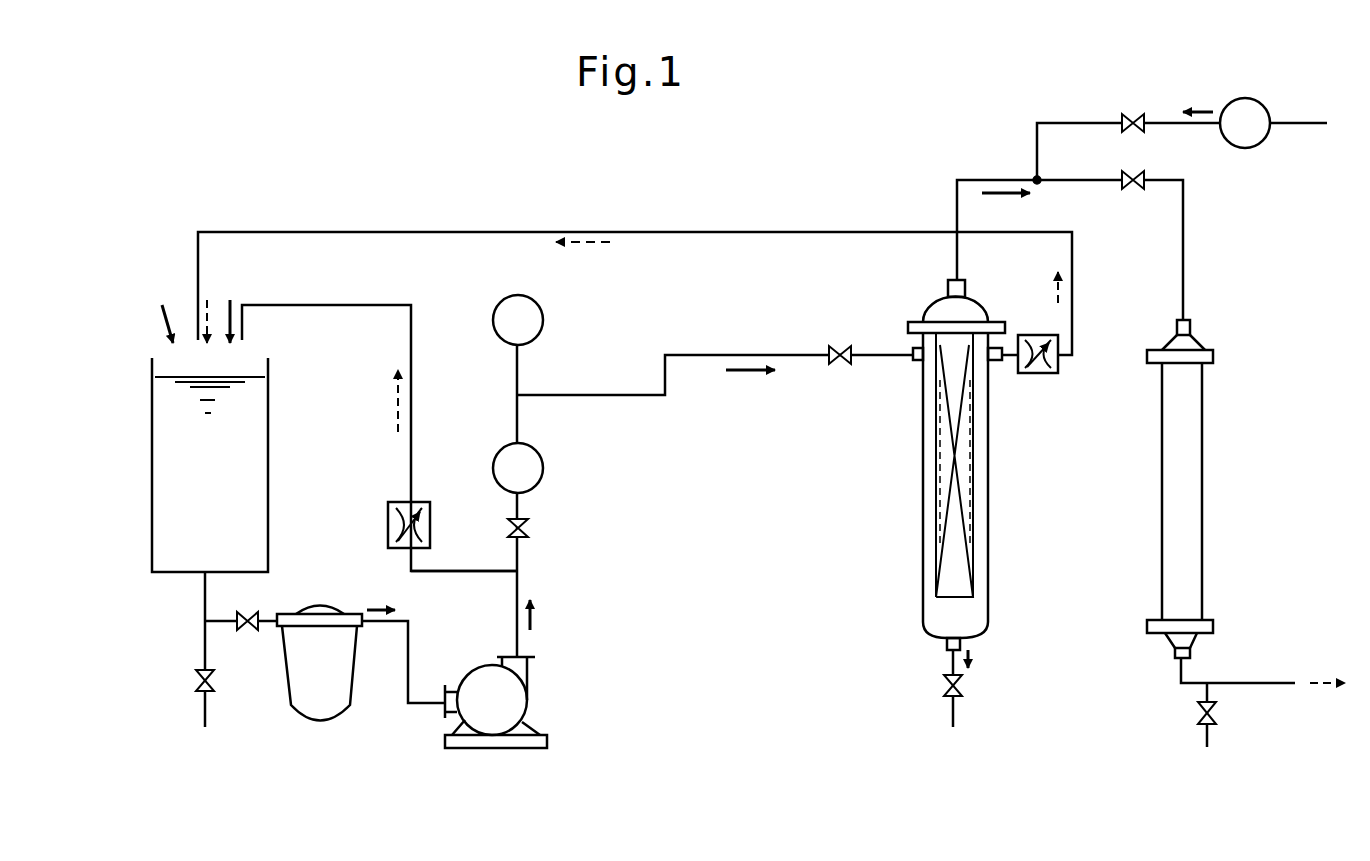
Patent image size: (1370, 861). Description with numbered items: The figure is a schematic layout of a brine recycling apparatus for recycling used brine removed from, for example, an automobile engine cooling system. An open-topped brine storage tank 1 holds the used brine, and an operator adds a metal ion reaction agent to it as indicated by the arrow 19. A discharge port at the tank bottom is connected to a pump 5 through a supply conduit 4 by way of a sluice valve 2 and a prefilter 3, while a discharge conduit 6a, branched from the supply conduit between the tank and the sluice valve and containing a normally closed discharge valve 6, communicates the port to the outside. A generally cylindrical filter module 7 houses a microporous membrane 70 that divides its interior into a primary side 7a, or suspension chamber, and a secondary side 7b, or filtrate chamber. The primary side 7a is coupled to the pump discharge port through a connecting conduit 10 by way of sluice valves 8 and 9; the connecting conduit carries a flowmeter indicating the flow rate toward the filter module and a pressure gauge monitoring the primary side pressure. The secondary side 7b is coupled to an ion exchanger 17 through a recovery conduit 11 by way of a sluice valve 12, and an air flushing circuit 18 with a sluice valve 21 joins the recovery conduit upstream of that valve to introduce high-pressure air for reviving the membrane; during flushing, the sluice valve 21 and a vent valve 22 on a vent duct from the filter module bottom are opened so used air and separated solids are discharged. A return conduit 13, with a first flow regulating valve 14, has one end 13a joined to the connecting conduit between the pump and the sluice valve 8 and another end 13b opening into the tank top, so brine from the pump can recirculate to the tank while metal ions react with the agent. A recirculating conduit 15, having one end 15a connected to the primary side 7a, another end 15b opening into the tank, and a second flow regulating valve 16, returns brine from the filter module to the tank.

The brine storage tank 1 is at (150, 522).
The sluice valve 2 is at (247, 632).
The prefilter 3 is at (318, 722).
The supply conduit 4 is at (418, 705).
The pump 5 is at (497, 720).
The discharge valve 6 is at (200, 683).
The discharge conduit 6a is at (203, 645).
The filter module 7 is at (965, 451).
The primary side 7a is at (920, 380).
The secondary side 7b is at (975, 312).
The sluice valve 8 is at (526, 527).
The sluice valve 9 is at (842, 348).
The connecting conduit 10 is at (695, 355).
The recovery conduit 11 is at (1183, 250).
The sluice valve 12 is at (1128, 176).
The return conduit 13 is at (310, 305).
The one end of return conduit 13a is at (477, 569).
The other end of return conduit 13b is at (243, 325).
The first flow regulating valve 14 is at (416, 502).
The recirculating conduit 15 is at (782, 233).
The one end of recirculating conduit 15a is at (1005, 365).
The other end of recirculating conduit 15b is at (197, 302).
The second flow regulating valve 16 is at (1058, 343).
The ion exchanger 17 is at (1203, 520).
The air flushing circuit 18 is at (1165, 122).
The arrow 19 is at (160, 322).
The sluice valve 21 is at (1128, 116).
The vent valve 22 is at (962, 690).
The microporous membrane 70 is at (975, 520).